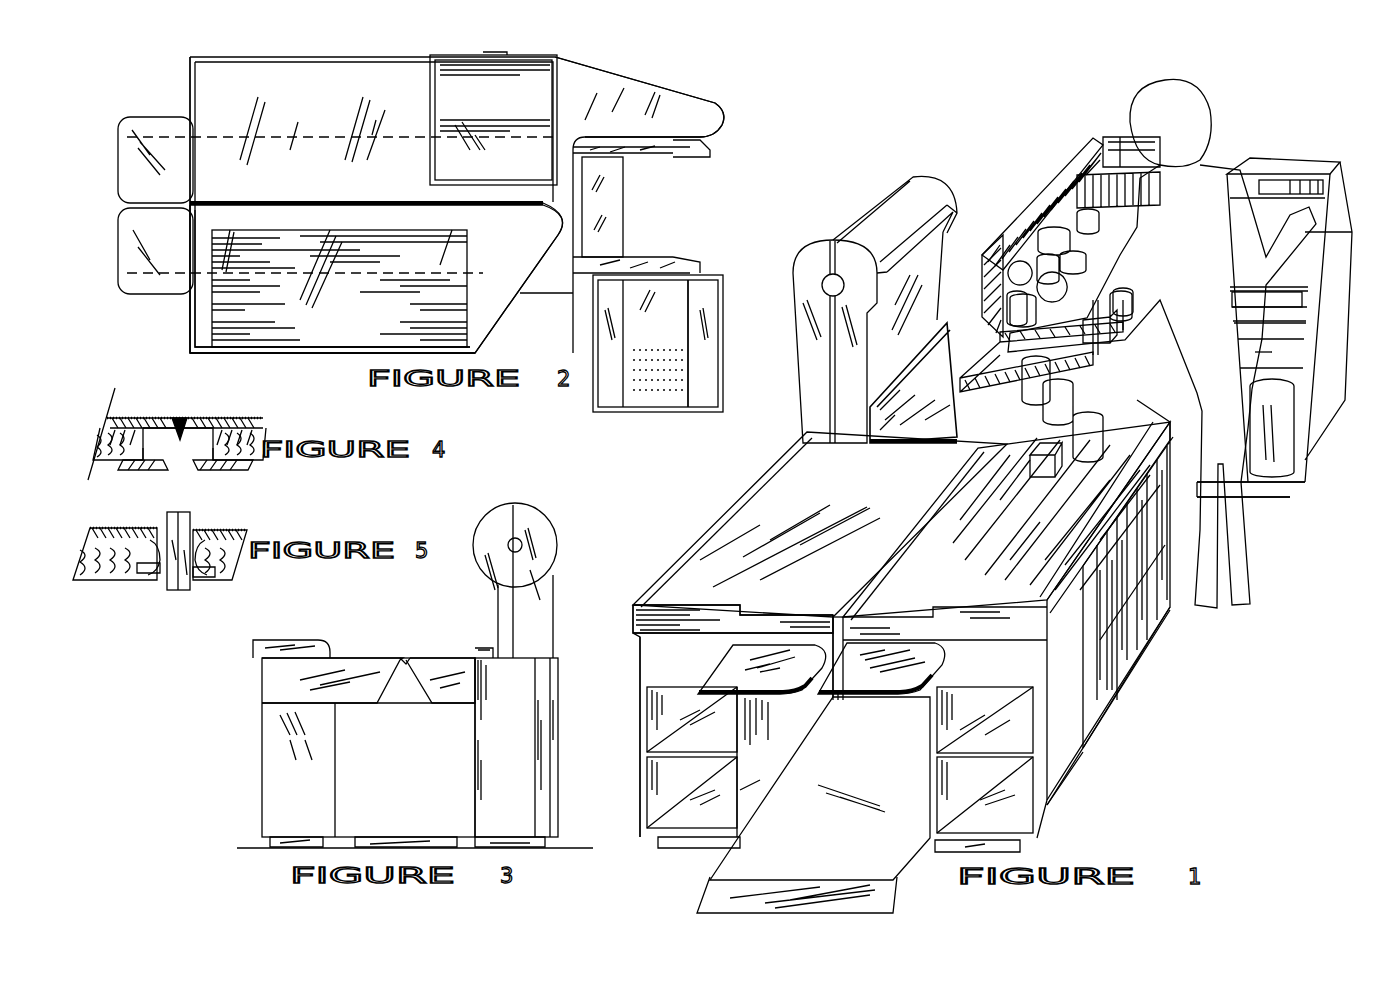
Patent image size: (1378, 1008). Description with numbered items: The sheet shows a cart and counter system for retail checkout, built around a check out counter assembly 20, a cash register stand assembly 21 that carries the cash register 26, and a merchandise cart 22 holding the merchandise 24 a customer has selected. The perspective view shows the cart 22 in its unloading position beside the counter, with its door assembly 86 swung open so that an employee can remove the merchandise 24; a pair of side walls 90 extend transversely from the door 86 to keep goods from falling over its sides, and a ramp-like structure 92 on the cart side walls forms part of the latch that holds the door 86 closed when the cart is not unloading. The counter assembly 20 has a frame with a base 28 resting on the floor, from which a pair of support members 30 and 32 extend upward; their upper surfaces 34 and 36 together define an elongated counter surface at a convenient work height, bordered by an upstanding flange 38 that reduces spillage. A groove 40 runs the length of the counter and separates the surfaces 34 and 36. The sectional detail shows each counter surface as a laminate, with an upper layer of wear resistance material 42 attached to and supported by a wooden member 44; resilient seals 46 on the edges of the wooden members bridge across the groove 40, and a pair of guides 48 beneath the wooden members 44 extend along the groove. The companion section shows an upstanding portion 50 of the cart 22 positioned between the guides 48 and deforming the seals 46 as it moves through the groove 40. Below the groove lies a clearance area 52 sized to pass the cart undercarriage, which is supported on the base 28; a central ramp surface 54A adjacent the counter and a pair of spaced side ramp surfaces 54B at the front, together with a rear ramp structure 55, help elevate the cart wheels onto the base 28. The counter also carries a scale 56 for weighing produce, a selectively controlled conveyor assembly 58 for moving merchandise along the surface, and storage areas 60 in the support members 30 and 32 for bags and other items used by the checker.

In FIG. 2, the check out counter assembly 20 is at (188, 80).
In FIG. 3, the check out counter assembly 20 is at (555, 692).
In FIG. 1, the check out counter assembly 20 is at (667, 557).
In FIG. 2, the cash register stand assembly 21 is at (640, 414).
In FIG. 1, the cash register stand assembly 21 is at (1323, 450).
In FIG. 1, the merchandise cart 22 is at (1067, 155).
In FIG. 1, the merchandise 24 is at (1077, 207).
In FIG. 2, the cash register 26 is at (695, 397).
In FIG. 1, the cash register 26 is at (1332, 160).
In FIG. 3, the base 28 is at (270, 840).
In FIG. 1, the base 28 is at (658, 843).
In FIG. 2, the support member 30 is at (297, 353).
In FIG. 3, the support member 30 is at (275, 738).
In FIG. 1, the support member 30 is at (1047, 745).
In FIG. 2, the support member 32 is at (188, 60).
In FIG. 3, the support member 32 is at (520, 798).
In FIG. 1, the support member 32 is at (640, 752).
In FIG. 2, the upper surface 34 is at (500, 300).
In FIG. 4, the upper surface 34 is at (152, 415).
In FIG. 5, the upper surface 34 is at (118, 525).
In FIG. 3, the upper surface 34 is at (372, 652).
In FIG. 1, the upper surface 34 is at (1093, 400).
In FIG. 2, the upper surface 36 is at (225, 110).
In FIG. 4, the upper surface 36 is at (205, 415).
In FIG. 5, the upper surface 36 is at (236, 527).
In FIG. 3, the upper surface 36 is at (428, 652).
In FIG. 1, the upper surface 36 is at (775, 560).
In FIG. 2, the upstanding flange 38 is at (190, 322).
In FIG. 3, the upstanding flange 38 is at (253, 650).
In FIG. 1, the upstanding flange 38 is at (633, 620).
In FIG. 2, the groove 40 is at (262, 205).
In FIG. 4, the groove 40 is at (180, 414).
In FIG. 5, the groove 40 is at (200, 513).
In FIG. 3, the groove 40 is at (403, 652).
In FIG. 1, the groove 40 is at (863, 592).
In FIG. 4, the wear resistance material 42 is at (130, 415).
In FIG. 4, the wooden member 44 is at (262, 425).
In FIG. 4, the resilient seals 46 is at (175, 415).
In FIG. 5, the resilient seals 46 is at (195, 578).
In FIG. 4, the guides 48 is at (128, 472).
In FIG. 5, the guides 48 is at (140, 575).
In FIG. 5, the portion of the cart 50 is at (185, 515).
In FIG. 3, the clearance area 52 is at (398, 745).
In FIG. 1, the clearance area 52 is at (873, 740).
In FIG. 2, the central ramp surface 54A is at (623, 199).
In FIG. 2, the side ramp surfaces 54B is at (687, 152).
In FIG. 2, the ramp structure 55 is at (118, 210).
In FIG. 1, the ramp structure 55 is at (888, 889).
In FIG. 2, the scale 56 is at (540, 82).
In FIG. 3, the scale 56 is at (492, 512).
In FIG. 1, the scale 56 is at (845, 220).
In FIG. 2, the conveyor assembly 58 is at (400, 330).
In FIG. 1, the conveyor assembly 58 is at (1060, 537).
In FIG. 1, the storage areas 60 is at (690, 722).
In FIG. 1, the door assembly 86 is at (962, 435).
In FIG. 1, the side walls 90 is at (950, 340).
In FIG. 1, the ramp-like structure 92 is at (985, 252).